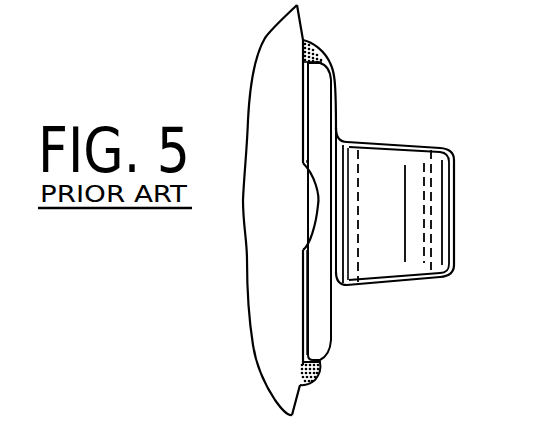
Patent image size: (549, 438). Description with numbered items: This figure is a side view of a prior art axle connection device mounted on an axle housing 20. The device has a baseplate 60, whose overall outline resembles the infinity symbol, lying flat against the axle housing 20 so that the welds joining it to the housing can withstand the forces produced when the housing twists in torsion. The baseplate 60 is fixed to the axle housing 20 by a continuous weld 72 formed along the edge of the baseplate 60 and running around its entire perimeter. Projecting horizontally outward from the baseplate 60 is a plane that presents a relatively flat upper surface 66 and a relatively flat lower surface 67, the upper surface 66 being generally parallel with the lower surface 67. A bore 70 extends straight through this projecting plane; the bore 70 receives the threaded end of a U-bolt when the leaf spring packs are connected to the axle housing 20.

The axle housing 20 is at (281, 41).
The baseplate 60 is at (317, 97).
The upper surface 66 is at (347, 148).
The lower surface 67 is at (341, 289).
The bore 70 is at (398, 210).
The continuous weld 72 is at (318, 45).